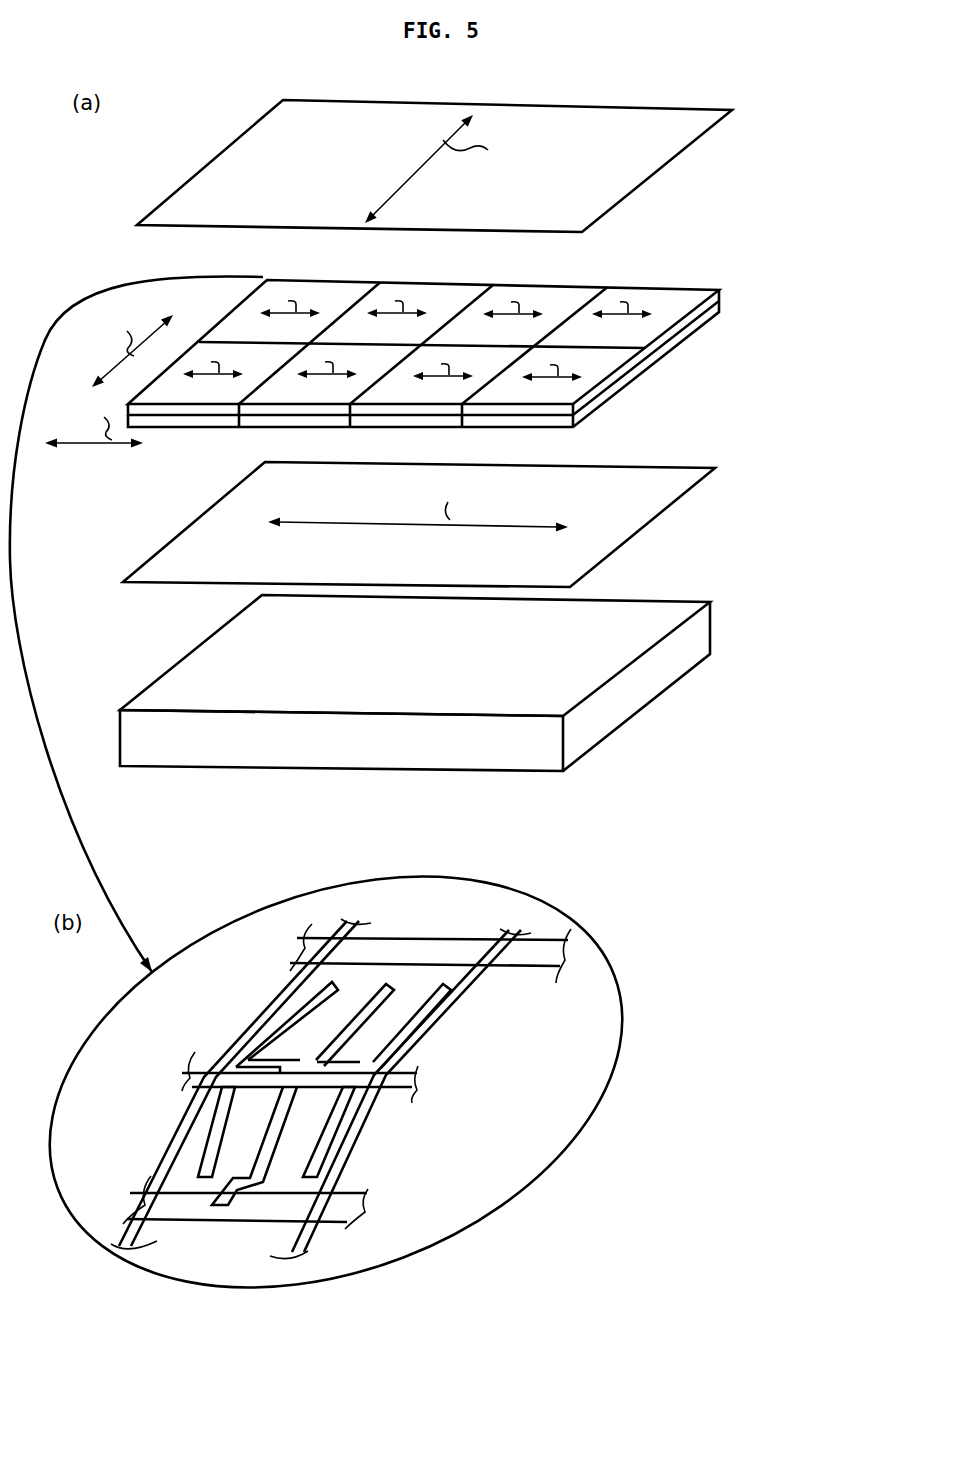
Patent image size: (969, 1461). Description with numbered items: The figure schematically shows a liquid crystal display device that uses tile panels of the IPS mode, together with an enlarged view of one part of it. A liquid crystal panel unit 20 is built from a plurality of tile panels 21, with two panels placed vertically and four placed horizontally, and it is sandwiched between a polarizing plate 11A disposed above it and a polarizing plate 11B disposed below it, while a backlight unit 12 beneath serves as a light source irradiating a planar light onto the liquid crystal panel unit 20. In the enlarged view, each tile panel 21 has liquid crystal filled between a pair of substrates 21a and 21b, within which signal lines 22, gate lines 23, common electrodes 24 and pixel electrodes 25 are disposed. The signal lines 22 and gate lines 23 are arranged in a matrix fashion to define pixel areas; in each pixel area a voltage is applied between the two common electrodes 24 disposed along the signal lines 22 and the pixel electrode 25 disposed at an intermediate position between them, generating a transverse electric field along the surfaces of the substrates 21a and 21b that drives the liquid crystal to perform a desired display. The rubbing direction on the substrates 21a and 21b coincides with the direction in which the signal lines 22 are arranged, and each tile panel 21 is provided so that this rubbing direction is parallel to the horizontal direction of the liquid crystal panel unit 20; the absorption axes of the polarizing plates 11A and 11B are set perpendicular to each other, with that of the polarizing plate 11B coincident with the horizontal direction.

In FIG. 5A, the polarizing plate 11A is at (230, 161).
In FIG. 5A, the polarizing plate 11B is at (221, 521).
In FIG. 5A, the backlight unit 12 is at (213, 667).
In FIG. 5A, the liquid crystal panel unit 20 is at (445, 347).
In FIG. 5A, the tile panel 21 is at (338, 295).
In FIG. 5A, the substrate 21a is at (720, 297).
In FIG. 5A, the substrate 21b is at (701, 327).
In FIG. 5B, the signal line 22 is at (187, 1157).
In FIG. 5B, the gate line 23 is at (434, 940).
In FIG. 5B, the common electrode 24 is at (278, 1040).
In FIG. 5B, the pixel electrode 25 is at (337, 1037).